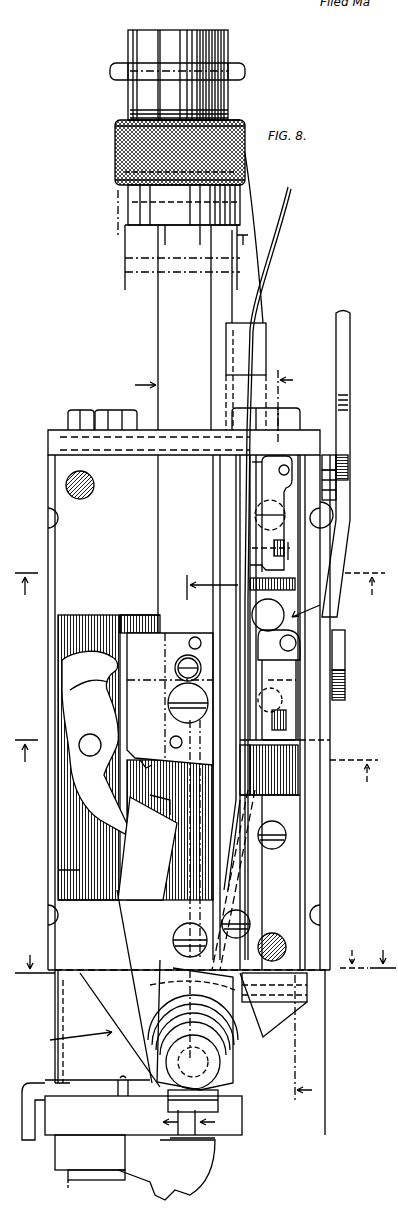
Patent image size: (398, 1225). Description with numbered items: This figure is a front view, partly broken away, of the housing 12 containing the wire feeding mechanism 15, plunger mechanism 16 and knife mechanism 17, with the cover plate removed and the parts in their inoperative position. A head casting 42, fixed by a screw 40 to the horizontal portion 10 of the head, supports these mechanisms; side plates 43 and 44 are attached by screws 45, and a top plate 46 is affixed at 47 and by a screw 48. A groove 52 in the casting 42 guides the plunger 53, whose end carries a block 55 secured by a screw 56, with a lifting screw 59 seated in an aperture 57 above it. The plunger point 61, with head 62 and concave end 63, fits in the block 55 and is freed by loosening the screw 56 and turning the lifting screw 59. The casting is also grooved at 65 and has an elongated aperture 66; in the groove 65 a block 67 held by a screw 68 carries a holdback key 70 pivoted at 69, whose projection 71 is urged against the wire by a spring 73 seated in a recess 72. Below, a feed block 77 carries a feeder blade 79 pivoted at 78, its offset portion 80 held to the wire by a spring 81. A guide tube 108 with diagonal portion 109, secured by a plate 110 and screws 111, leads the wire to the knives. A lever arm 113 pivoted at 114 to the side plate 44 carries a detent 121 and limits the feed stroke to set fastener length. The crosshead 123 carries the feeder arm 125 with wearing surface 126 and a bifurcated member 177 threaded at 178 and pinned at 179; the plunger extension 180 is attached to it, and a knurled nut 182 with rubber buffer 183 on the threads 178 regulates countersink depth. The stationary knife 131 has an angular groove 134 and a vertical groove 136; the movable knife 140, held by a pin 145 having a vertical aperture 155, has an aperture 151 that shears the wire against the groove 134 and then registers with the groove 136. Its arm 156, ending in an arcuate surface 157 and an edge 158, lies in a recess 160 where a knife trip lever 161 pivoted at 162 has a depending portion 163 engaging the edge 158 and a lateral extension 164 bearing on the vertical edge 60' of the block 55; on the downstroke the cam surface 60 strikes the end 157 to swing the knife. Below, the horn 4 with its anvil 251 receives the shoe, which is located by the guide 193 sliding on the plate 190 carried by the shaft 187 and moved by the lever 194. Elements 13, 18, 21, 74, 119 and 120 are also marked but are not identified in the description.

The horn 4 is at (198, 1172).
The horizontally extending portion 10 is at (301, 735).
The housing 12 is at (196, 767).
The section line 13 is at (200, 594).
The wire feeding mechanism 15 is at (275, 855).
The plunger mechanism 16 is at (214, 757).
The knife or fastener forming mechanism 17 is at (191, 992).
The section line 18 is at (383, 952).
The dowel pin 21 is at (230, 439).
The screw 40 is at (176, 942).
The head casting 42 is at (68, 541).
The side plate 43 is at (56, 660).
The side plate 44 is at (326, 725).
The screws 45 is at (44, 517).
The top plate 46 is at (52, 443).
The fastening 47 is at (78, 418).
The screw 48 is at (112, 418).
The recess or groove 52 is at (160, 528).
The plunger 53 is at (172, 490).
The block 55 is at (168, 640).
The screw 56 is at (180, 698).
The aperture 57 is at (176, 660).
The lifting screw 59 is at (176, 672).
The cam surface 60 is at (146, 744).
The vertical edge 60' is at (115, 612).
The driver or plunger point 61 is at (196, 826).
The head 62 is at (216, 718).
The concave end 63 is at (194, 890).
The groove 65 is at (324, 742).
The elongated aperture 66 is at (296, 778).
The block 67 is at (292, 513).
The screw 68 is at (256, 517).
The pivot 69 is at (286, 466).
The holdback key 70 is at (268, 496).
The wire engaging projection 71 is at (254, 482).
The recess 72 is at (250, 549).
The coil spring 73 is at (292, 545).
The pin 74 is at (290, 560).
The block 77 is at (290, 604).
The pivot 78 is at (296, 643).
The feeder blade 79 is at (286, 668).
The offset portion 80 is at (262, 661).
The spring 81 is at (288, 722).
The guide tube 108 is at (252, 772).
The diagonal portion 109 is at (232, 903).
The plate 110 is at (286, 876).
The screws 111 is at (270, 848).
The lever arm 113 is at (348, 362).
The pivot 114 is at (346, 684).
The bracket 119 is at (336, 486).
The pin 120 is at (336, 458).
The detent 121 is at (348, 470).
The crosshead 123 is at (165, 42).
The feeder arm 125 is at (252, 230).
The hardened wearing surface 126 is at (260, 337).
The stationary knife member 131 is at (98, 992).
The angular groove 134 is at (236, 1010).
The vertical groove 136 is at (180, 988).
The movable knife member 140 is at (240, 1044).
The pin 145 is at (170, 1054).
The aperture 151 is at (238, 1062).
The vertical aperture 155 is at (232, 1075).
The arm 156 is at (128, 865).
The arcuate surface 157 is at (160, 818).
The angular edge 158 is at (120, 820).
The recess 160 is at (70, 830).
The knife trip lever 161 is at (70, 722).
The pivot 162 is at (88, 747).
The depending portion 163 is at (112, 808).
The lateral extension 164 is at (80, 676).
The bifurcated member 177 is at (222, 38).
The threaded area 178 is at (232, 110).
The pin 179 is at (246, 73).
The reduced extension 180 is at (160, 232).
The knurled adjusting nut 182 is at (117, 162).
The rubber buffer 183 is at (130, 218).
The shaft 187 is at (70, 1180).
The guide carrying plate 190 is at (244, 1128).
The guide 193 is at (220, 1106).
The lever 194 is at (44, 1080).
The horn tip or anvil 251 is at (216, 1142).